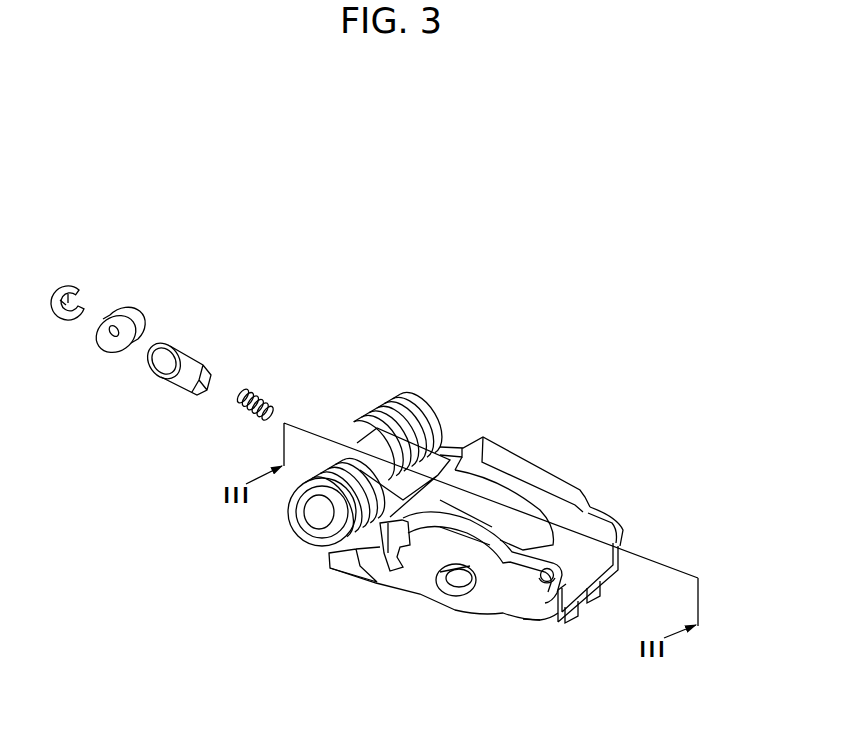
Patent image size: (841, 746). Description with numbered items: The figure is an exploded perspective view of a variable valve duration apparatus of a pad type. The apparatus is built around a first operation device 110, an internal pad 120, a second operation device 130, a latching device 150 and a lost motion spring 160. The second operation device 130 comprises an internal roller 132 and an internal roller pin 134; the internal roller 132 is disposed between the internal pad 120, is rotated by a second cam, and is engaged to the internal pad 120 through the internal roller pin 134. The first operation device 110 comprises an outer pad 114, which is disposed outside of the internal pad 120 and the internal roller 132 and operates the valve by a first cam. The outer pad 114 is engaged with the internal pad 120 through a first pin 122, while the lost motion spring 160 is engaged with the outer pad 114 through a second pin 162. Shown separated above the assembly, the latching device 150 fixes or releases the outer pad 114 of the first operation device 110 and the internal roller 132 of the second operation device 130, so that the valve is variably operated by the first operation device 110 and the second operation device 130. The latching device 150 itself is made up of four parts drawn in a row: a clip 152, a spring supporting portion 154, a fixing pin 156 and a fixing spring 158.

The first operation device 110 is at (511, 617).
The outer pad 114 is at (533, 612).
The internal pad 120 is at (571, 515).
The first pin 122 is at (548, 588).
The second operation device 130 is at (508, 480).
The internal roller 132 is at (485, 480).
The internal roller pin 134 is at (458, 592).
The latching device 150 is at (137, 196).
The clip 152 is at (84, 282).
The spring supporting portion 154 is at (138, 315).
The fixing pin 156 is at (190, 359).
The fixing spring 158 is at (257, 394).
The lost motion spring 160 is at (291, 537).
The second pin 162 is at (363, 553).